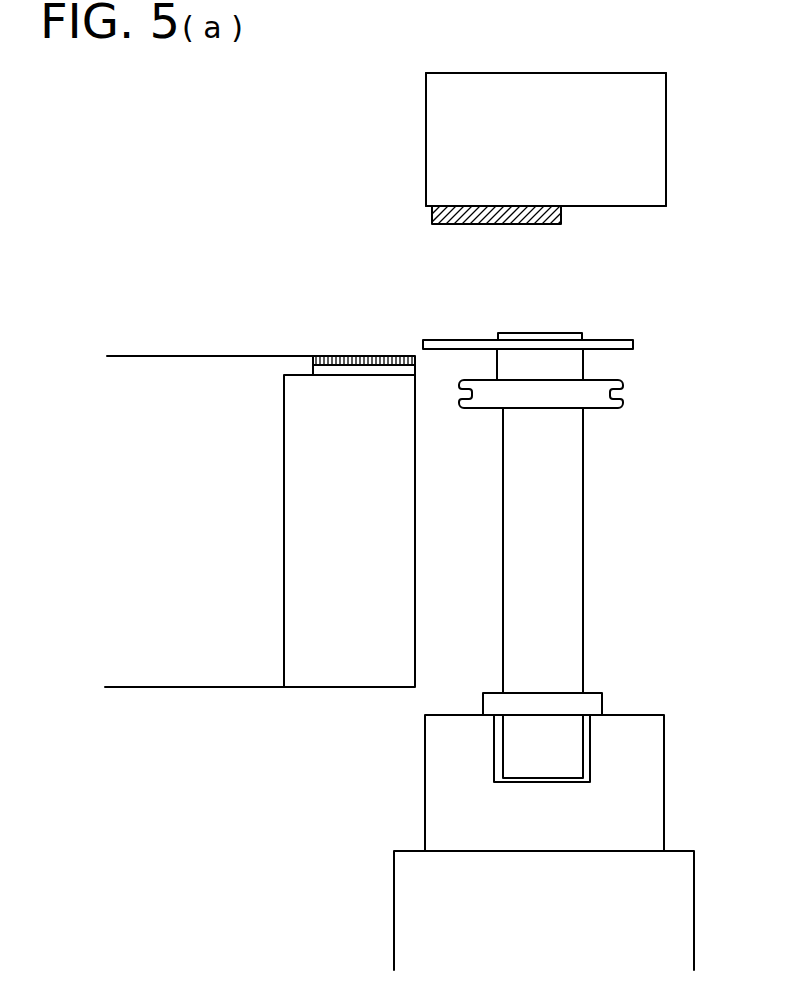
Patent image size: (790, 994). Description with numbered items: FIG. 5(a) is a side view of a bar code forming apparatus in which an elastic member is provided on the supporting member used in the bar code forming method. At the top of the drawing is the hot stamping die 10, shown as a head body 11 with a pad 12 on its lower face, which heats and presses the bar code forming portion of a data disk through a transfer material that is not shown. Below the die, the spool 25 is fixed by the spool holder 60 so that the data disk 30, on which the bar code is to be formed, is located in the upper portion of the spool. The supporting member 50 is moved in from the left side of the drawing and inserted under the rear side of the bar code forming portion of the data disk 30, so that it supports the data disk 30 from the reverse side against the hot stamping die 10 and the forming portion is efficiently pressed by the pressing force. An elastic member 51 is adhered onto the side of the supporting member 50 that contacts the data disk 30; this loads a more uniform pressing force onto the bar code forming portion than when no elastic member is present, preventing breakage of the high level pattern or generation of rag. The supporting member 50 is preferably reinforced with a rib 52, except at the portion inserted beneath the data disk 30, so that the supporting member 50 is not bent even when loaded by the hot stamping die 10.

The hot stamping die 10 is at (418, 123).
The head body 11 is at (648, 145).
The suction pad 12 is at (500, 224).
The spool 25 is at (592, 582).
The data disk 30 is at (473, 340).
The supporting member 50 is at (272, 342).
The elastic member 51 is at (365, 356).
The rib 52 is at (398, 577).
The spool holder 60 is at (637, 788).